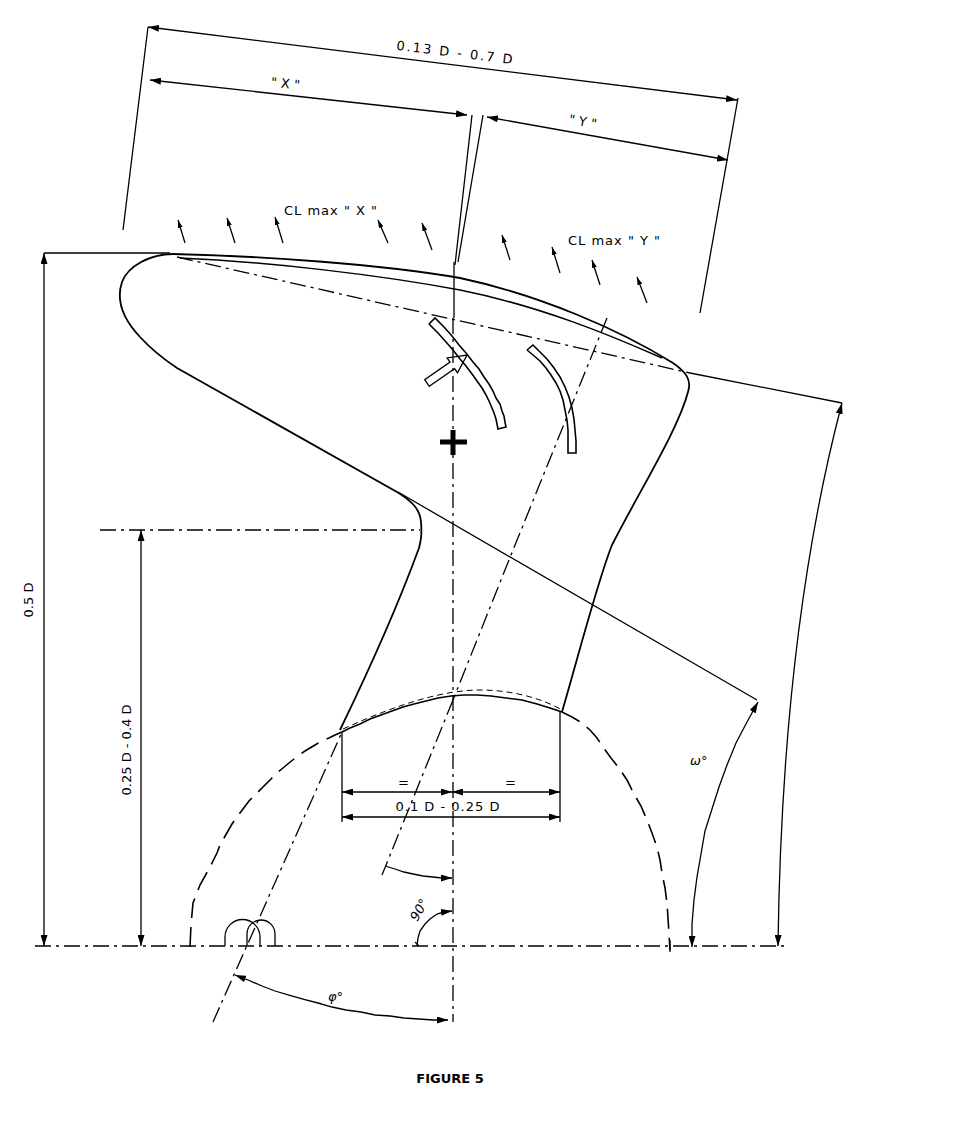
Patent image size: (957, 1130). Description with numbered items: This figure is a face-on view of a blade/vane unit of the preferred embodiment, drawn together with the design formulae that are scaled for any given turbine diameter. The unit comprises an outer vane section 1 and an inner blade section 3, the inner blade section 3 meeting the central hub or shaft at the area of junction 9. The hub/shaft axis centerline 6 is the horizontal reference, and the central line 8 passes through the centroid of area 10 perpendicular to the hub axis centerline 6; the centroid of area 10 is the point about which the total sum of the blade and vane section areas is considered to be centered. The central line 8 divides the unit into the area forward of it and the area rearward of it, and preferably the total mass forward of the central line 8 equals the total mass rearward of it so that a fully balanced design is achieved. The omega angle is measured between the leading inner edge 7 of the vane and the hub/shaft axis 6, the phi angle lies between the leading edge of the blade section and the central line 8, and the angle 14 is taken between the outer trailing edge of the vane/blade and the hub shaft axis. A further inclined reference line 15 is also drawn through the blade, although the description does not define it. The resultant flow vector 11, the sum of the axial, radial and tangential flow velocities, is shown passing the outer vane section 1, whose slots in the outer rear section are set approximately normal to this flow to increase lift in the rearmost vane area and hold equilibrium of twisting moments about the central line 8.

The outer vane section 1 is at (414, 492).
The inner blade section 3 is at (482, 630).
The hub/shaft axis centerline 6 is at (412, 822).
The leading inner edge 7 is at (178, 377).
The central line 8 is at (462, 638).
The area of junction between the blade/vane and the central hub or shaft 9 is at (452, 703).
The centroid of area 10 is at (462, 448).
The resultant flow vector 11 is at (442, 370).
The angle between the vane/blade outer trailing edge and the hub shaft axis 14 is at (511, 330).
The blade pitch axis 15 is at (494, 598).